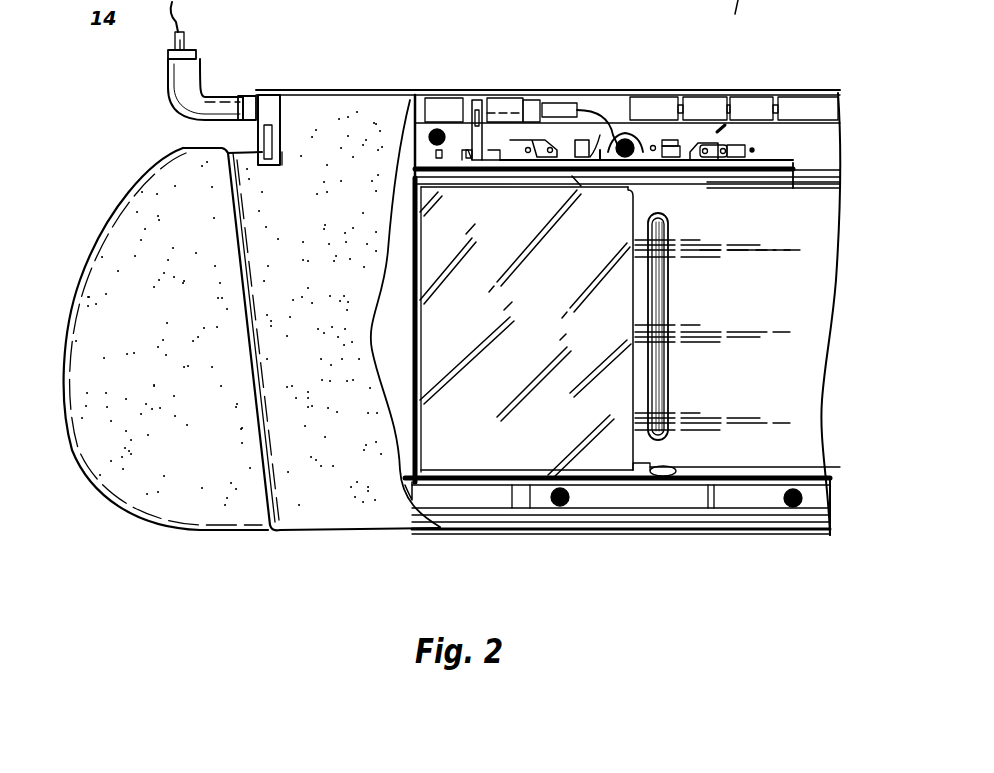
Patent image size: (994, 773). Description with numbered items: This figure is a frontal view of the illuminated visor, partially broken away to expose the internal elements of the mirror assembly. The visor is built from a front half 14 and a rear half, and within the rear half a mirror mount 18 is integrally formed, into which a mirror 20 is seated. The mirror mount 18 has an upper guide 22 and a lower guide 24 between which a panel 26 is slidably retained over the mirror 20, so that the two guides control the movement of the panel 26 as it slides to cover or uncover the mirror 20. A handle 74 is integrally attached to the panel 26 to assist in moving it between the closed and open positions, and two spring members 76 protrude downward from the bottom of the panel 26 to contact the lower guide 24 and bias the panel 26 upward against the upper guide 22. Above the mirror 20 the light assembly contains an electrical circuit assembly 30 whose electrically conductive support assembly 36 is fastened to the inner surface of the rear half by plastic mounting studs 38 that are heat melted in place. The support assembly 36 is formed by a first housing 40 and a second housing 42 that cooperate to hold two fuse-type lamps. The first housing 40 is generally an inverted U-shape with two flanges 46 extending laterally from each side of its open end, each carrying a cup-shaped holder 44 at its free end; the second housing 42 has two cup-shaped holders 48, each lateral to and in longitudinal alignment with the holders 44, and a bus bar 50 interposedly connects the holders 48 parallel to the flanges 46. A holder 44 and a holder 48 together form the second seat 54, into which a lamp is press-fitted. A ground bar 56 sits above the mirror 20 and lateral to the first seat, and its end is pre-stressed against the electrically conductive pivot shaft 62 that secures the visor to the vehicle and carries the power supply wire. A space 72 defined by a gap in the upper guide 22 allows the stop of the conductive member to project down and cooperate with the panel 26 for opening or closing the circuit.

The front half 14 is at (143, 197).
The pivot shaft 62 is at (258, 100).
The upper guide 22 is at (407, 167).
The ground bar 56 is at (470, 140).
The cup-shaped holder 48 is at (507, 130).
The second housing 42 is at (537, 143).
The electrical circuit assembly 30 is at (585, 147).
The flange 46 is at (598, 140).
The plastic mounting stud 38 is at (652, 148).
The cup-shaped holder 44 is at (687, 150).
The first housing 40 is at (715, 148).
The support assembly 36 is at (727, 150).
The second seat 54 is at (772, 138).
The space 72 is at (790, 167).
The bus bar 50 is at (677, 177).
The handle 74 is at (663, 363).
The panel 26 is at (788, 423).
The mirror mount 18 is at (463, 498).
The lower guide 24 is at (513, 490).
The mirror 20 is at (597, 463).
The spring member 76 is at (658, 477).